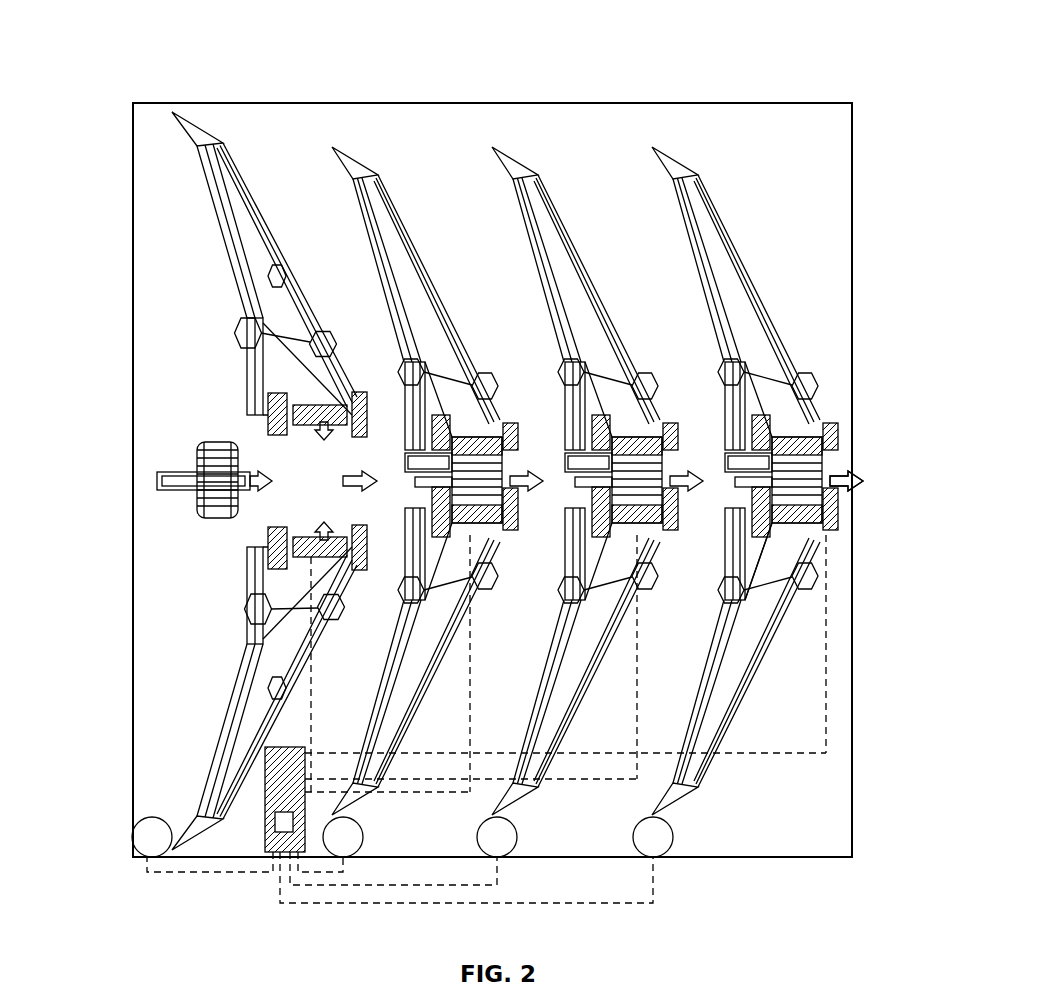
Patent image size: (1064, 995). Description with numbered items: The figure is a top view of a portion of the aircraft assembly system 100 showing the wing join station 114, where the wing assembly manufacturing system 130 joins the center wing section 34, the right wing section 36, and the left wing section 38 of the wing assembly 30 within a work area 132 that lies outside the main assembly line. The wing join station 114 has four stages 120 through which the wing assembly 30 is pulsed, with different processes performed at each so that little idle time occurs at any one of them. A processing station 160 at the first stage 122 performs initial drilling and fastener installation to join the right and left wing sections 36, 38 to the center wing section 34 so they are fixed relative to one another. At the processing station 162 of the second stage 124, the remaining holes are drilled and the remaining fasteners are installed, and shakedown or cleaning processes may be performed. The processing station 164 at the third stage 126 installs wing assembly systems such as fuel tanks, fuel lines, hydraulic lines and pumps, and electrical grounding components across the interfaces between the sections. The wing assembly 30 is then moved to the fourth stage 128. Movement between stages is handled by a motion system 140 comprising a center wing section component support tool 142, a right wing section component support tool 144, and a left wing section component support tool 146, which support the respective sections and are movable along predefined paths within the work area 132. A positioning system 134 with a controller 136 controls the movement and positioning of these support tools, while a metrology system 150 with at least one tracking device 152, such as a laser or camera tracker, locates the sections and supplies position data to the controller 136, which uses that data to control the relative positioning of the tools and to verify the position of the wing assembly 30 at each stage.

The aircraft assembly system 100 is at (860, 76).
The wing join station 114 is at (160, 100).
The stages 120 is at (728, 798).
The first stage 122 is at (213, 406).
The second stage 124 is at (437, 434).
The third stage 126 is at (557, 160).
The fourth stage 128 is at (782, 403).
The wing assembly manufacturing system 130 is at (824, 238).
The work area 132 is at (858, 108).
The wing assembly 30 is at (828, 550).
The center wing section 34 is at (208, 506).
The right wing section 36 is at (244, 668).
The left wing section 38 is at (244, 296).
The positioning system 134 is at (264, 815).
The controller 136 is at (486, 851).
The motion system 140 is at (213, 657).
The center wing section component support tool 142 is at (268, 530).
The right wing section component support tool 144 is at (290, 550).
The left wing section component support tool 146 is at (238, 336).
The metrology system 150 is at (375, 858).
The tracking device 152 is at (140, 850).
The processing station 160 is at (358, 385).
The processing station 162 is at (512, 408).
The processing station 164 is at (672, 408).